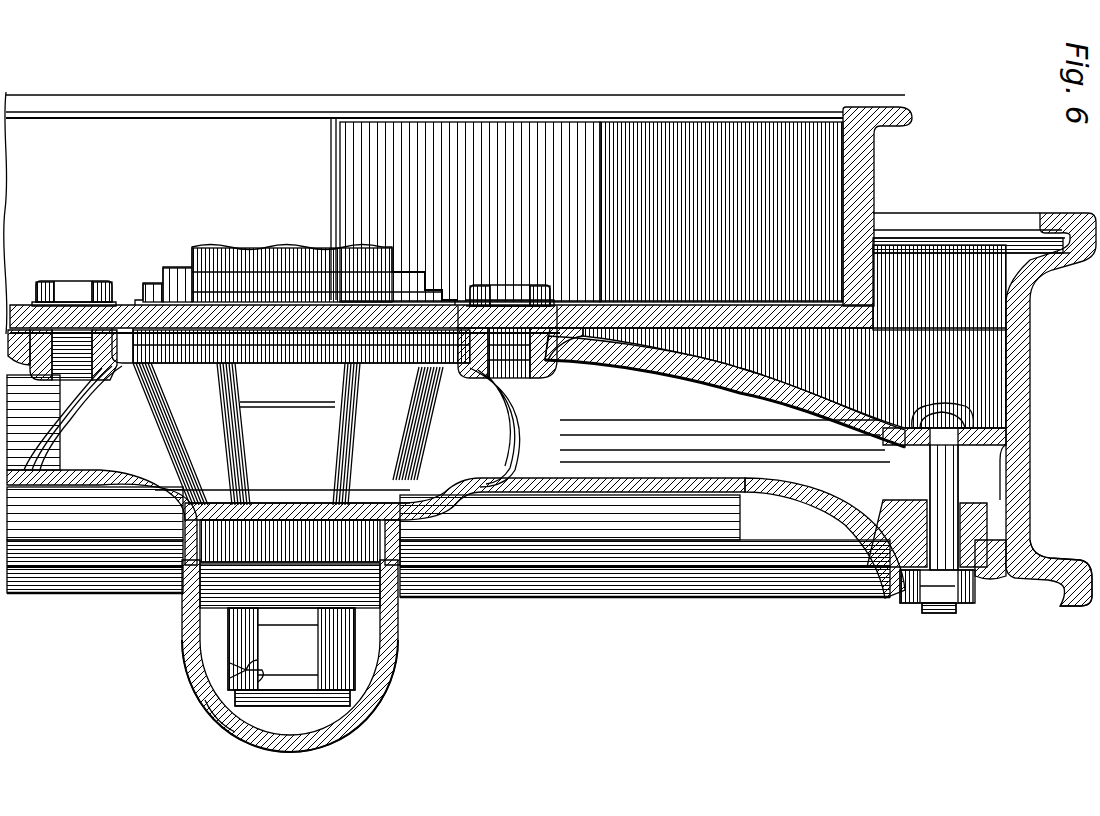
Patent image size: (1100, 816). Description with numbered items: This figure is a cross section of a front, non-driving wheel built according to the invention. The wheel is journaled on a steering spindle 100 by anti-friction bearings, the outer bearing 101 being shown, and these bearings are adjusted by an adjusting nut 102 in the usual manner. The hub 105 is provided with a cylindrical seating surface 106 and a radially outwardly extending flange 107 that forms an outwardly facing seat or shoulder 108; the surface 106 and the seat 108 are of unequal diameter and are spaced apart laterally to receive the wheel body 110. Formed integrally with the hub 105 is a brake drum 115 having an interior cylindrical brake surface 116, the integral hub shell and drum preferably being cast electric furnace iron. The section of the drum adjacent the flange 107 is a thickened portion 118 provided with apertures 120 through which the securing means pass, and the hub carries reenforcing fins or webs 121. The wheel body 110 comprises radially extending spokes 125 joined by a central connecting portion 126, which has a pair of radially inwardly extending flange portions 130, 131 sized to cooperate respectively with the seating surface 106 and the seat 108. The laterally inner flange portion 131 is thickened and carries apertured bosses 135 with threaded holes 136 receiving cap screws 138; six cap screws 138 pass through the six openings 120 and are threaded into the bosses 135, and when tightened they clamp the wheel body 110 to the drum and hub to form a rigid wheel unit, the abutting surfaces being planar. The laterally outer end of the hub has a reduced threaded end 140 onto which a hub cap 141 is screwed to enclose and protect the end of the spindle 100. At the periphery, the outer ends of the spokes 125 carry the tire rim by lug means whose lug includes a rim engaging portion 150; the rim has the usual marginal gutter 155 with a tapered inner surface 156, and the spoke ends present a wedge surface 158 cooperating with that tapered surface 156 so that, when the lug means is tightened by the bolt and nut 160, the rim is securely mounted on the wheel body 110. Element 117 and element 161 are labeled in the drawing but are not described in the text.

The steering spindle 100 is at (393, 254).
The outer bearing 101 is at (383, 677).
The adjusting nut 102 is at (371, 720).
The hub 105 is at (407, 427).
The cylindrical seating surface 106 is at (396, 604).
The radially outwardly extending flange 107 is at (121, 364).
The outwardly facing seat or shoulder 108 is at (447, 303).
The wheel body 110 is at (578, 488).
The brake drum 115 is at (858, 130).
The interior cylindrical brake surface 116 is at (832, 122).
The bracket 117 is at (987, 587).
The thickened portion 118 is at (576, 316).
The apertures 120 is at (560, 312).
The reenforcing fins or webs 121 is at (153, 423).
The spokes 125 is at (607, 488).
The central connecting portion 126 is at (545, 488).
The radially inwardly extending flange portion 130 is at (413, 500).
The laterally inner flange portion 131 is at (470, 300).
The apertured bosses 135 is at (101, 304).
The threaded holes 136 is at (48, 356).
The cap screws 138 is at (67, 281).
The reduced threaded end 140 is at (384, 640).
The hub cap 141 is at (188, 686).
The rim engaging portion 150 is at (1013, 580).
The marginal gutter 155 is at (1017, 575).
The tapered inner surface 156 is at (1007, 443).
The wedge surface 158 is at (1003, 497).
The bolt and nut 160 is at (927, 613).
The rivet nut 161 is at (953, 575).